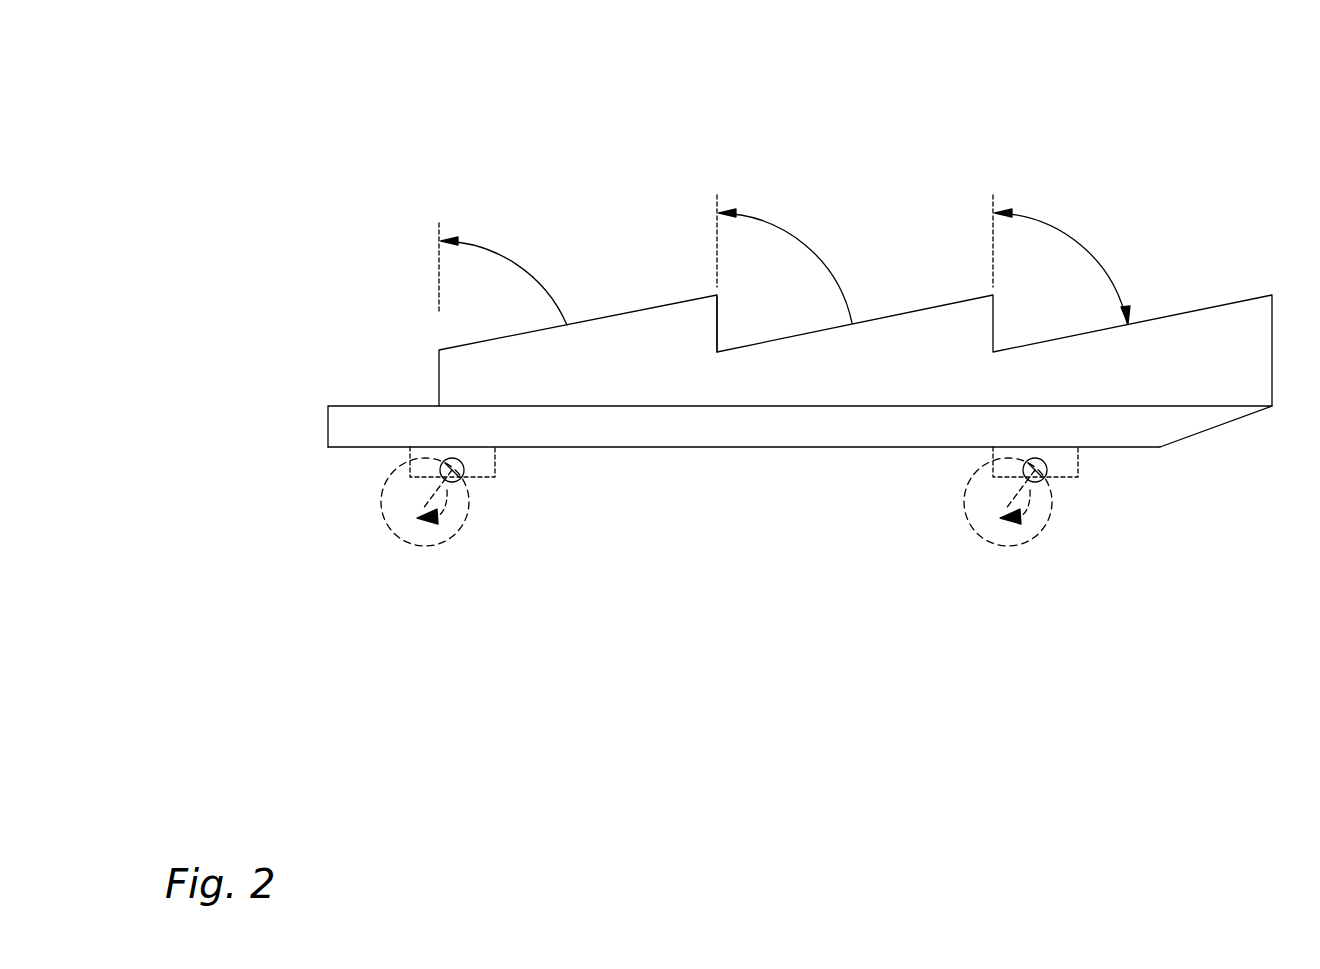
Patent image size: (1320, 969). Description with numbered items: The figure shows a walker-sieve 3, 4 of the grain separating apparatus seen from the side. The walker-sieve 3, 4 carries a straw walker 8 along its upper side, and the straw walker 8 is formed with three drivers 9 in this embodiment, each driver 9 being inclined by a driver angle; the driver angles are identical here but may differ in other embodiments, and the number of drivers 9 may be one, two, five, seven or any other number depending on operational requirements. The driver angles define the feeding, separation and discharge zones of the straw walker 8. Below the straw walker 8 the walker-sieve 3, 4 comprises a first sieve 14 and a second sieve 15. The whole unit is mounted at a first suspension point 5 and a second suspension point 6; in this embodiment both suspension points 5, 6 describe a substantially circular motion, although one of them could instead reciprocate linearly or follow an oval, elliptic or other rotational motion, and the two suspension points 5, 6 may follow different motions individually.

The first walker-sieve 3 is at (718, 324).
The second walker-sieve 4 is at (753, 366).
The first sieve 14 is at (387, 406).
The second sieve 15 is at (719, 447).
The straw walker 8 is at (638, 343).
The drivers 9 is at (718, 323).
The second suspension point 6 is at (463, 463).
The first suspension point 5 is at (1045, 463).